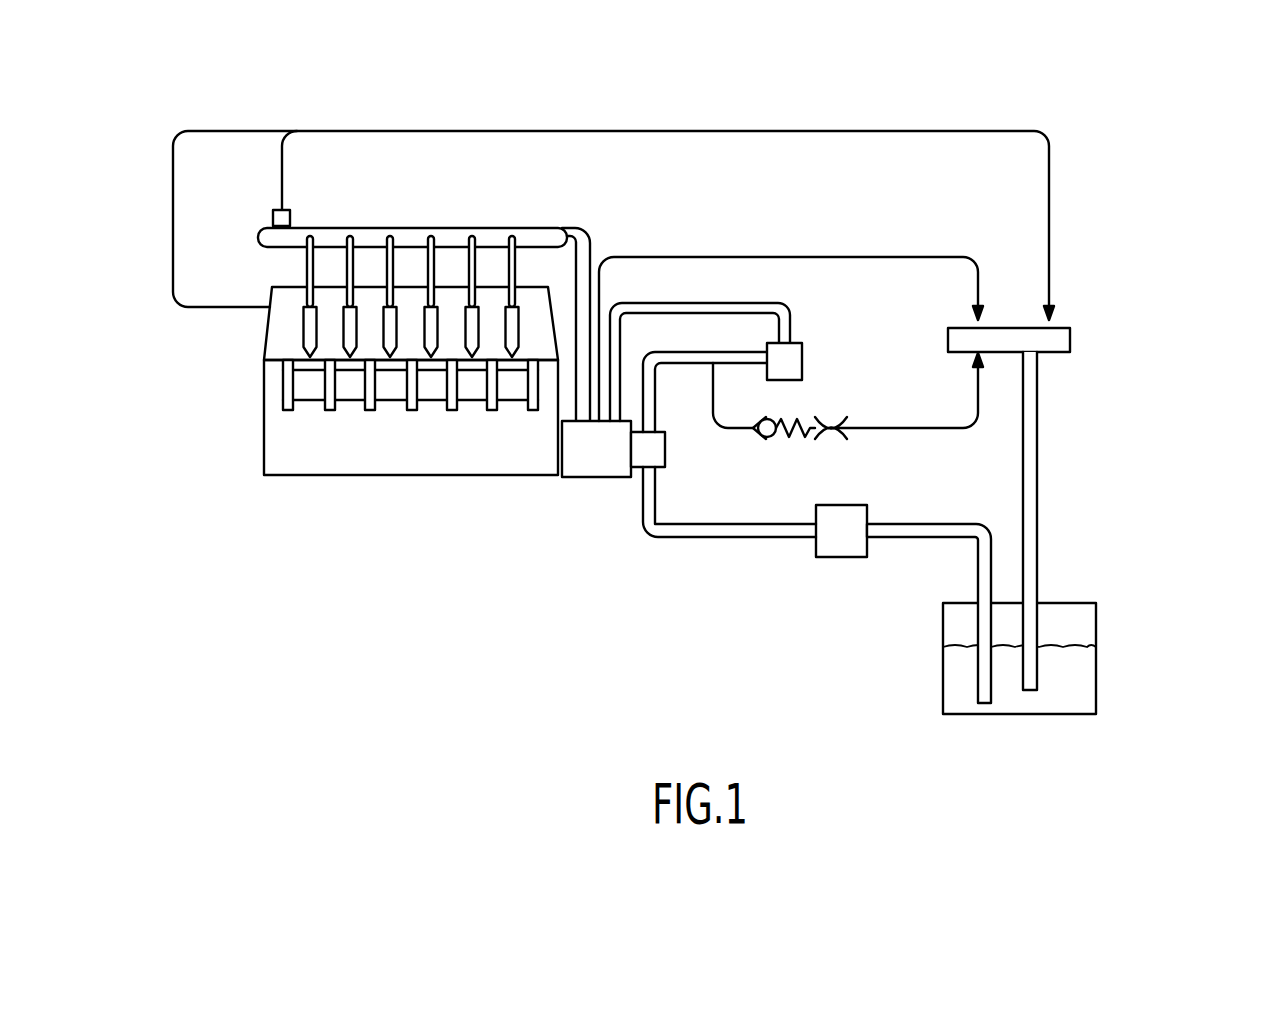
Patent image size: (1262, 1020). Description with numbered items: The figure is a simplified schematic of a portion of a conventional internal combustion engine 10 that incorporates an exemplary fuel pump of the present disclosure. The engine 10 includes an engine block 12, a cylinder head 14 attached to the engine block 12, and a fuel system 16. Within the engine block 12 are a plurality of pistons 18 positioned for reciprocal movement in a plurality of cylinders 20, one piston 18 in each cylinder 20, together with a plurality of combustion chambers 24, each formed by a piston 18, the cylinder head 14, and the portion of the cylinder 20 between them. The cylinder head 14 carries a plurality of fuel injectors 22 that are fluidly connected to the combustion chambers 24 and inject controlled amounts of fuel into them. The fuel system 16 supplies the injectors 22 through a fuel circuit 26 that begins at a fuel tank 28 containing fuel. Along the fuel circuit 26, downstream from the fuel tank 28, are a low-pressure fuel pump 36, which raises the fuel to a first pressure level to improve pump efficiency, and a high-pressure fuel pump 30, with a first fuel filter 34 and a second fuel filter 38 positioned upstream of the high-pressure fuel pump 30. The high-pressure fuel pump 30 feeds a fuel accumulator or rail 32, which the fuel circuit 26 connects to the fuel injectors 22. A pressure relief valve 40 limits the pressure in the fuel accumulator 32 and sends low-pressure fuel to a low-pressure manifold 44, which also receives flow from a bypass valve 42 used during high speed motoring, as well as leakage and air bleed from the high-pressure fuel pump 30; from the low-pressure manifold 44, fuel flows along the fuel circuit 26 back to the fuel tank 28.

The internal combustion engine 10 is at (1150, 131).
The engine block 12 is at (264, 455).
The cylinder head 14 is at (268, 328).
The fuel system 16 is at (1082, 474).
The pistons 18 is at (308, 380).
The cylinders 20 is at (283, 377).
The fuel injectors 22 is at (345, 318).
The combustion chambers 24 is at (433, 370).
The fuel circuit 26 is at (697, 548).
The fuel tank 28 is at (1096, 622).
The high-pressure fuel pump 30 is at (595, 477).
The fuel accumulator or rail 32 is at (465, 228).
The first fuel filter 34 is at (835, 557).
The low-pressure fuel pump 36 is at (665, 448).
The second fuel filter 38 is at (802, 362).
The pressure relief valve 40 is at (273, 213).
The bypass valve 42 is at (808, 455).
The low-pressure manifold 44 is at (1070, 338).